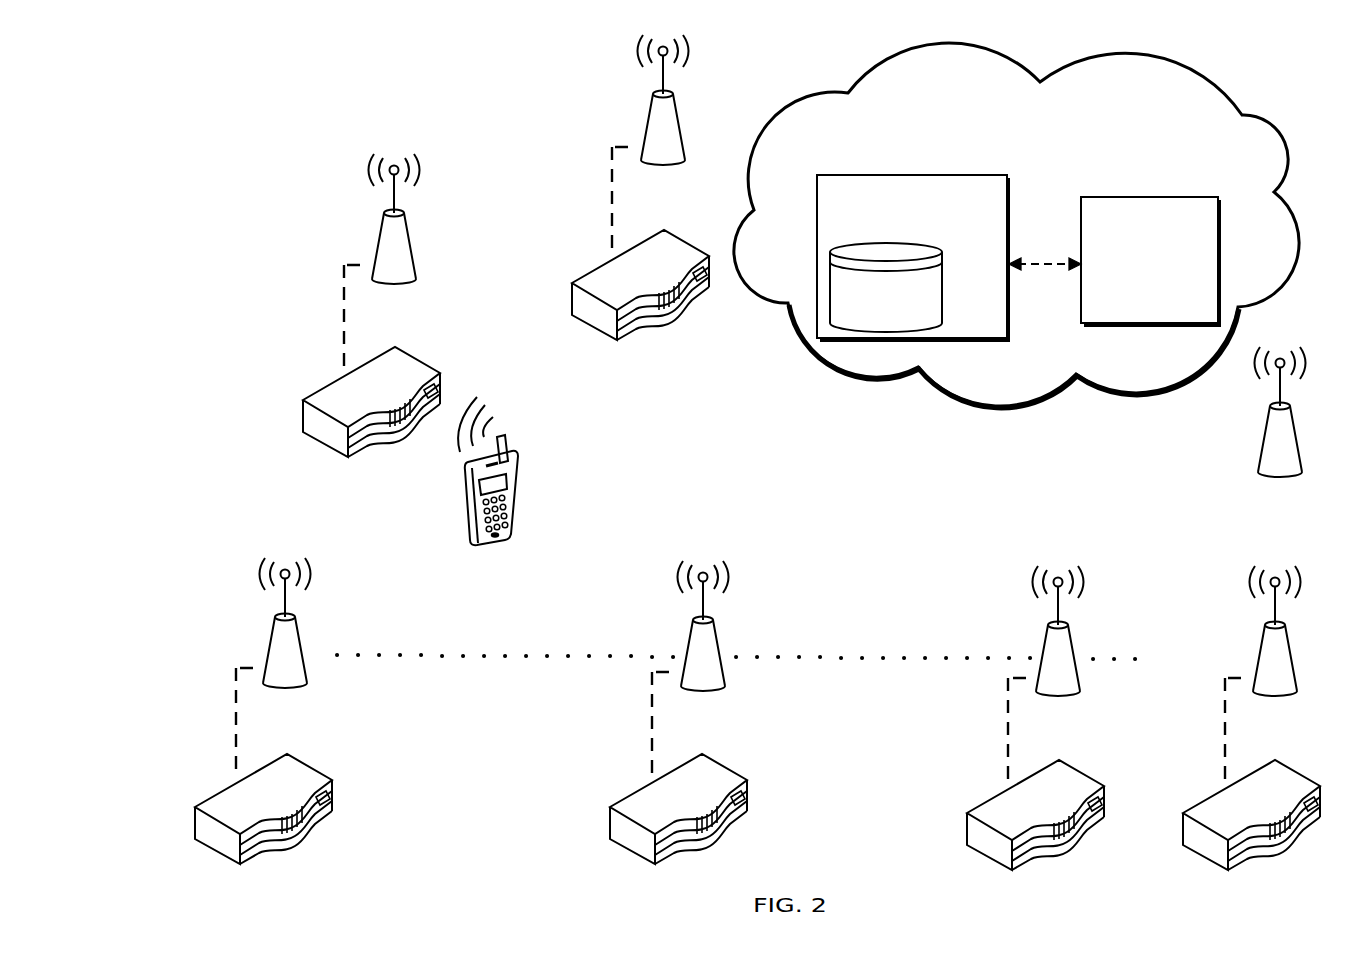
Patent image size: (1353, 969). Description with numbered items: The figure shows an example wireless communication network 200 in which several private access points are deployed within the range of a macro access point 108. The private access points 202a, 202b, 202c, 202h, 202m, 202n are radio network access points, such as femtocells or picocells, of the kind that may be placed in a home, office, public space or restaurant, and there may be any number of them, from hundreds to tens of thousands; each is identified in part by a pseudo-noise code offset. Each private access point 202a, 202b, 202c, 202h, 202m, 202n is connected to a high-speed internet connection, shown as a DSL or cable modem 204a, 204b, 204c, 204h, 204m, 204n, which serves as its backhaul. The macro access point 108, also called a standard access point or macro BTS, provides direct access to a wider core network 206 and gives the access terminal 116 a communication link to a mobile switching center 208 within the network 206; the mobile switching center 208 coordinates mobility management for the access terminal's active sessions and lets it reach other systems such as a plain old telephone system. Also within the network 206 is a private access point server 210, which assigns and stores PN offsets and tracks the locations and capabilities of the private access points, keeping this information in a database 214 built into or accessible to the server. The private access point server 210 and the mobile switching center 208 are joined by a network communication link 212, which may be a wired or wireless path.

The wireless communication network 200 is at (238, 119).
The private access point 202a is at (647, 130).
The private access point 202b is at (380, 252).
The private access point 202c is at (271, 647).
The private access point 202h is at (685, 648).
The private access point 202m is at (1043, 653).
The private access point 202n is at (1258, 653).
The DSL or cable modem 204a is at (588, 272).
The DSL or cable modem 204b is at (320, 391).
The DSL or cable modem 204c is at (213, 793).
The DSL or cable modem 204h is at (628, 794).
The DSL or cable modem 204m is at (983, 801).
The DSL or cable modem 204n is at (1201, 801).
The access terminal 116 is at (501, 533).
The macro access point 108 is at (1293, 431).
The network 206 is at (1031, 164).
The mobile switching center 208 is at (1203, 310).
The private access point server 210 is at (995, 333).
The network communication link 212 is at (1034, 257).
The database 214 is at (905, 321).